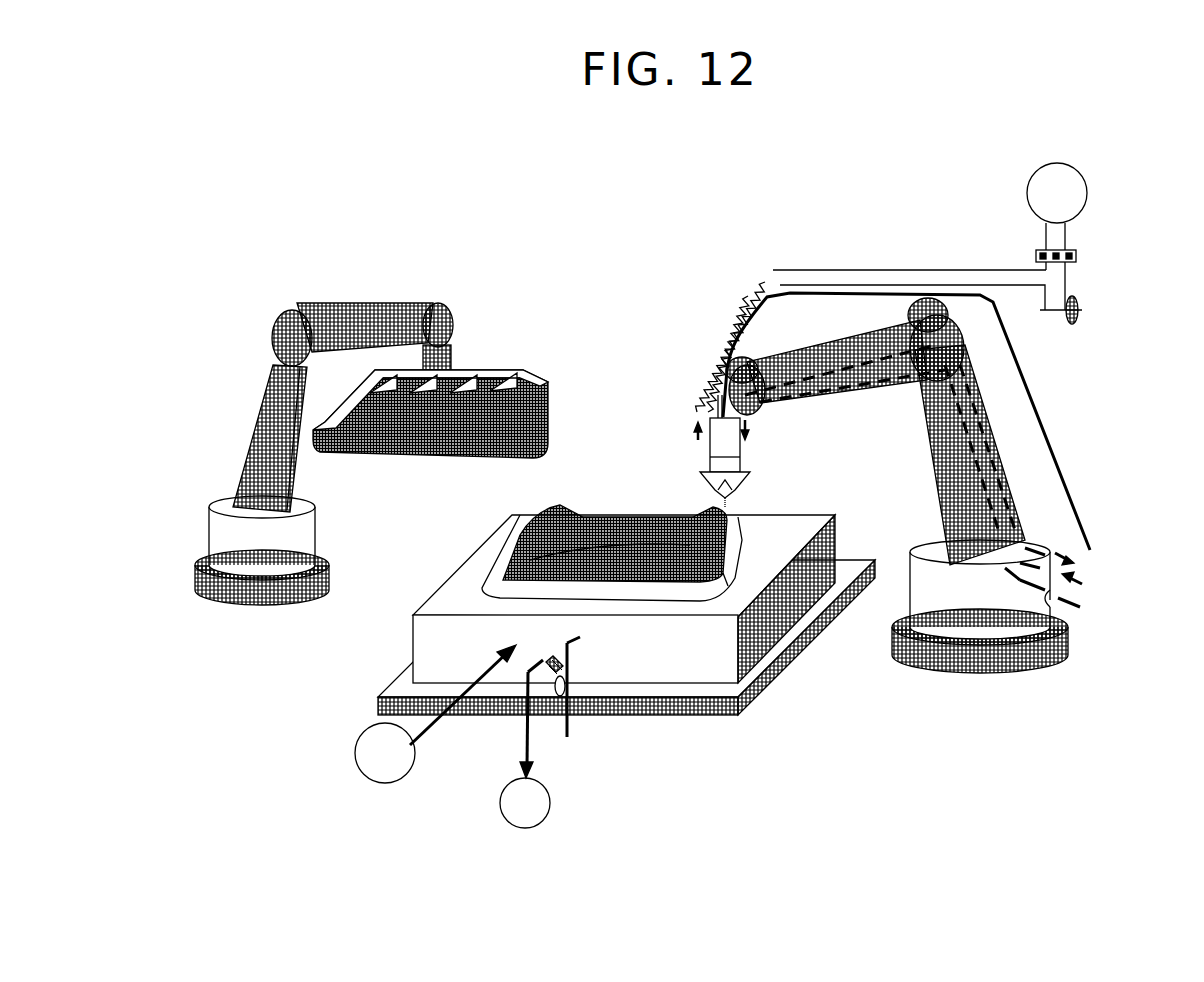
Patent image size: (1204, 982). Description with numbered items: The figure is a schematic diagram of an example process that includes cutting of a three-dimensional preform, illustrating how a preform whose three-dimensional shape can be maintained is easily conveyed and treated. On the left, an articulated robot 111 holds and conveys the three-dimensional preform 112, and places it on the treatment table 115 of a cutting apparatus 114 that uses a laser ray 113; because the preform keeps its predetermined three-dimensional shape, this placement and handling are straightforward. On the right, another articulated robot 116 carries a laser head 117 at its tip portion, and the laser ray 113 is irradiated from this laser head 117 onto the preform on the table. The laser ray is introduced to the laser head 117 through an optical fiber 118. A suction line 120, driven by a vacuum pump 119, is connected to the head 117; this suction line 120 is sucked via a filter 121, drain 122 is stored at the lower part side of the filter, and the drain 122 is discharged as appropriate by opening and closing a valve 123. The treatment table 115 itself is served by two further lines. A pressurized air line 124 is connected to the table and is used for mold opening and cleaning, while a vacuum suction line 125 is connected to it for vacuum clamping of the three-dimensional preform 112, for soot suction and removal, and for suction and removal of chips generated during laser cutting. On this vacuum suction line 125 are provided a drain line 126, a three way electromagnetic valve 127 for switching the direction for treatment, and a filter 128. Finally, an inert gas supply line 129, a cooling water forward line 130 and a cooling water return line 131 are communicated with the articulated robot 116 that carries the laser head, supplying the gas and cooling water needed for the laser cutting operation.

The articulated robot 111 is at (368, 307).
The three-dimensional preform 112 is at (520, 532).
The laser ray 113 is at (728, 506).
The cutting apparatus 114 is at (852, 682).
The treatment table 115 is at (440, 658).
The articulated robot 116 is at (997, 450).
The laser head 117 is at (705, 448).
The optical fiber 118 is at (1000, 365).
The vacuum pump 119 is at (1080, 172).
The suction line 120 is at (1045, 248).
The filter 121 is at (1075, 252).
The drain 122 is at (1075, 297).
The valve 123 is at (1082, 312).
The pressurized air line 124 is at (430, 722).
The vacuum suction line 125 is at (530, 752).
The drain line 126 is at (568, 722).
The three way electromagnetic valve 127 is at (600, 688).
The filter 128 is at (557, 670).
The inert gas supply line 129 is at (1057, 603).
The cooling water forward line 130 is at (1085, 578).
The cooling water return line 131 is at (1052, 552).